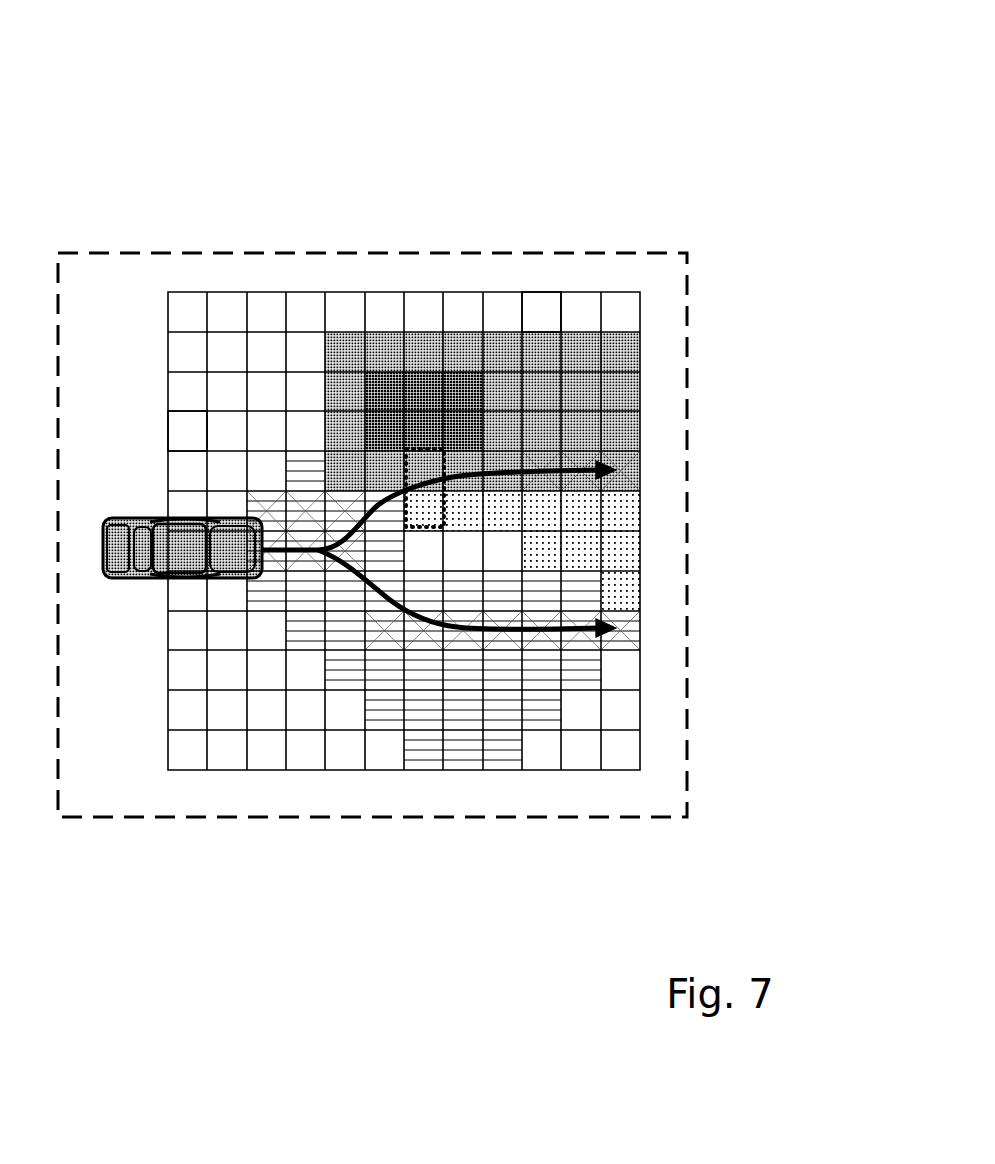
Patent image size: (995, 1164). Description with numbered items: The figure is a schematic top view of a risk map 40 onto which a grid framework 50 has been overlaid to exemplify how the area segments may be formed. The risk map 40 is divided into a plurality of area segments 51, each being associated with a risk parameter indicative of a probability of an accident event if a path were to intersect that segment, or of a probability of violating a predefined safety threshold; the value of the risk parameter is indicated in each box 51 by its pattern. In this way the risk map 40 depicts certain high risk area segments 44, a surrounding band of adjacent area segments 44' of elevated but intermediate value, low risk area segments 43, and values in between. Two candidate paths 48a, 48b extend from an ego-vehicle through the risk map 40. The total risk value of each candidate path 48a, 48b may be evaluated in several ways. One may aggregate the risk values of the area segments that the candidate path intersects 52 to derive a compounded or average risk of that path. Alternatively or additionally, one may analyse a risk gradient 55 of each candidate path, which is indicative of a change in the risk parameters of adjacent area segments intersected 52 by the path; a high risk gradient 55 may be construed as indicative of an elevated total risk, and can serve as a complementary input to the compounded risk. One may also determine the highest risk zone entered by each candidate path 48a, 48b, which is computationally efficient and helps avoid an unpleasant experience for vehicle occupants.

The risk map 40 is at (609, 148).
The grid framework 50 is at (219, 283).
The area segment 51 is at (180, 435).
The intersected area segments 52 is at (353, 497).
The risk gradient 55 is at (430, 447).
The high risk area segments 44 is at (424, 339).
The uncertain occupied cells around obstacle 44' is at (482, 352).
The low risk area segments 43 is at (497, 707).
The first candidate path 48a is at (555, 483).
The second candidate path 48b is at (522, 625).